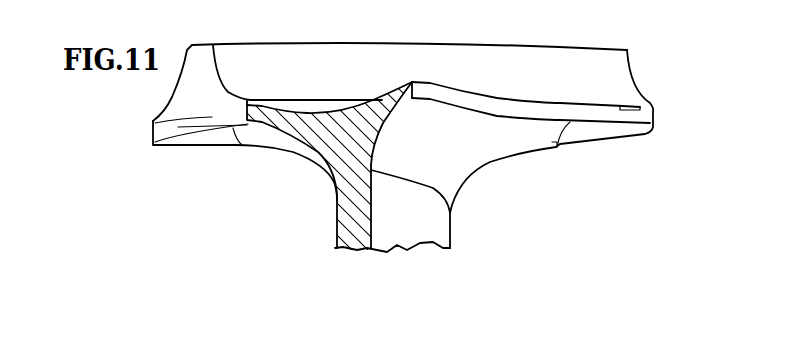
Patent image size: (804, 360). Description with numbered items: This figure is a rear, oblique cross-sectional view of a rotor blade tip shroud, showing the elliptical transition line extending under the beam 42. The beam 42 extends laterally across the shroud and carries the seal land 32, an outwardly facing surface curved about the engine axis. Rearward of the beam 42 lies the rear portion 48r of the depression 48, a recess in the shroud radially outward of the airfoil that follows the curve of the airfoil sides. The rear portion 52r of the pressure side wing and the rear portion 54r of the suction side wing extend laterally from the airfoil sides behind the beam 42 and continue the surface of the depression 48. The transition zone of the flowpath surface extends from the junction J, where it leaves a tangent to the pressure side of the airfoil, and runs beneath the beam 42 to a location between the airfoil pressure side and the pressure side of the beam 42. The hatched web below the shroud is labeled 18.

The seal land 32 is at (330, 42).
The beam 42 is at (153, 121).
The depression 48 is at (317, 110).
The rear portion of the depression 48r is at (347, 112).
The rear portion of the suction side wing 54r is at (395, 102).
The rear portion of the pressure side wing 52r is at (250, 120).
The junction J is at (410, 178).
The hub / disc web 18 is at (322, 252).